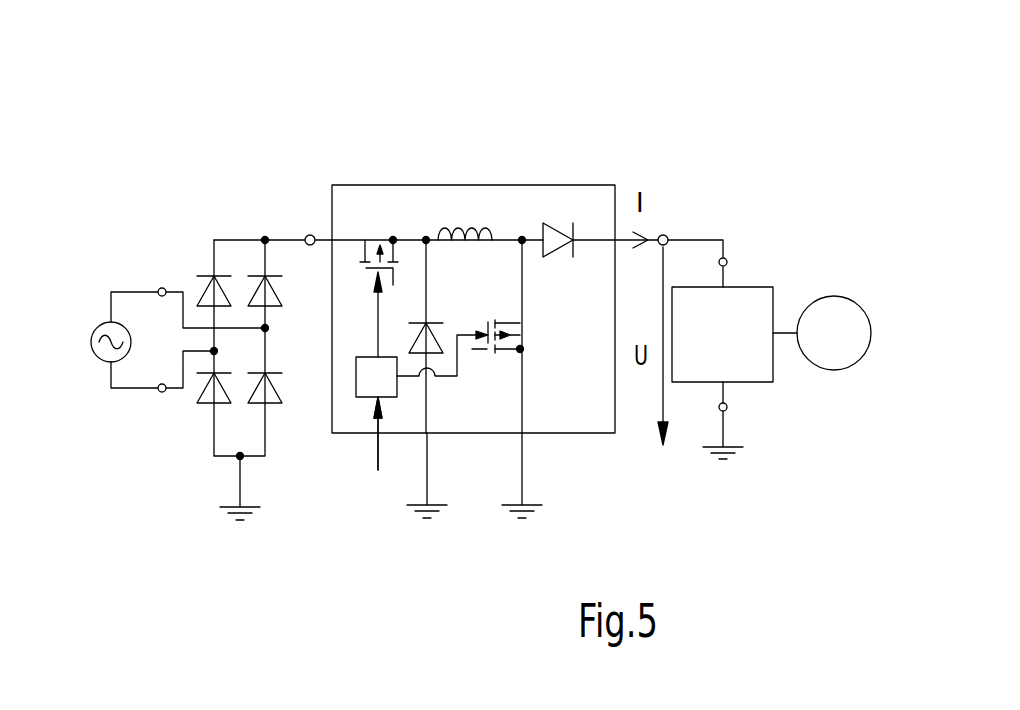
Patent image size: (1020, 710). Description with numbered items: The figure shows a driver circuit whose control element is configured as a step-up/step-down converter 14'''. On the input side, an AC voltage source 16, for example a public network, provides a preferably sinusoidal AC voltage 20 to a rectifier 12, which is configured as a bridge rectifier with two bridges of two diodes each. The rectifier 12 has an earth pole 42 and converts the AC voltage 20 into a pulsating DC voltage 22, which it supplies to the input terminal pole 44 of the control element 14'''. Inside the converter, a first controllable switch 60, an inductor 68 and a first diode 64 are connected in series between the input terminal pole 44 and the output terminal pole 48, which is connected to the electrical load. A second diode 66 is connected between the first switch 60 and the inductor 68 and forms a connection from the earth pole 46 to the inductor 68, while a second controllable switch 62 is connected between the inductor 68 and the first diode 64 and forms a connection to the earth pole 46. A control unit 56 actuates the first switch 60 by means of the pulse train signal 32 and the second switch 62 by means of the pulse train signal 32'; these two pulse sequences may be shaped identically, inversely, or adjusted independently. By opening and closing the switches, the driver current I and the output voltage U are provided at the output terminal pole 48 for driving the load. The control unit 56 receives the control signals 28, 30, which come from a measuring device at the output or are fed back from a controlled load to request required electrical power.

The rectifier 12 is at (200, 160).
The step-up/step-down converter 14''' is at (527, 240).
The AC voltage source 16 is at (110, 322).
The AC voltage 20 is at (146, 288).
The pulsating DC voltage 22 is at (293, 238).
The control signal 28 is at (378, 440).
The control signal 30 is at (340, 510).
The pulse train signal 32 is at (365, 314).
The pulse train signal 32' is at (456, 367).
The earth pole 42 is at (240, 475).
The input terminal pole 44 is at (310, 234).
The earth pole 46 is at (427, 445).
The output terminal pole 48 is at (663, 233).
The control unit 56 is at (368, 372).
The first controllable switch 60 is at (373, 238).
The second controllable switch 62 is at (522, 328).
The first diode 64 is at (556, 227).
The second diode 66 is at (432, 325).
The inductor 68 is at (470, 230).